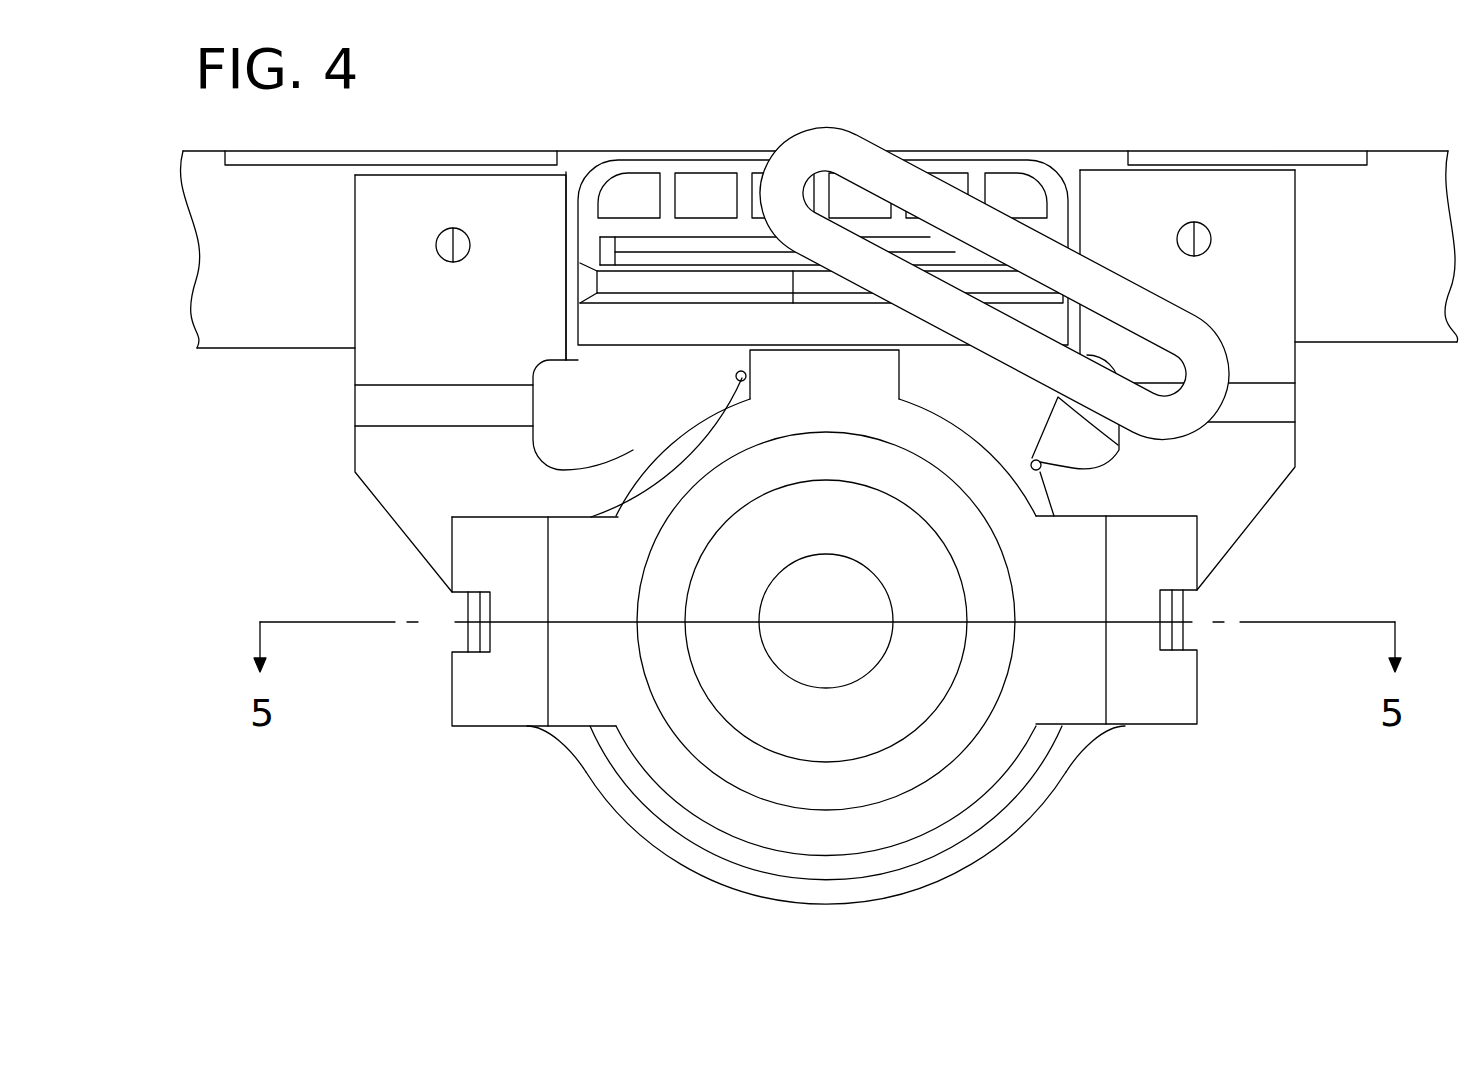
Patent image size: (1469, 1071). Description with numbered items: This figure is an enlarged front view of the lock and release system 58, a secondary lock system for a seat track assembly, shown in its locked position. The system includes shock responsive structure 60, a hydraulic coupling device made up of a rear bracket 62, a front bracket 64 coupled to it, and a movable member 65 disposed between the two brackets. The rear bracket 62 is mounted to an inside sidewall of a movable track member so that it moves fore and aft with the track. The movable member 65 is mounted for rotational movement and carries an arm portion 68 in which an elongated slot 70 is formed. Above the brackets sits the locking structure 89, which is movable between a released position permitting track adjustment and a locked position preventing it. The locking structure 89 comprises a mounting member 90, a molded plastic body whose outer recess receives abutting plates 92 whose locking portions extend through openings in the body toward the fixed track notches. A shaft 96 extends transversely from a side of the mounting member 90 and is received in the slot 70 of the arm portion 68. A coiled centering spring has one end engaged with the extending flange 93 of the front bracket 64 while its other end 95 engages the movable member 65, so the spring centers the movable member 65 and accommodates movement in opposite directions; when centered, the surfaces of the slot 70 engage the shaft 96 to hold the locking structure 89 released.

The lock and release system 58 is at (1302, 110).
The shock responsive structure 60 is at (1064, 774).
The rear bracket 62 is at (412, 512).
The front bracket 64 is at (573, 697).
The movable member 65 is at (1122, 450).
The arm portion 68 is at (1198, 337).
The elongated slot 70 is at (961, 243).
The locking structure 89 is at (757, 143).
The mounting member 90 is at (684, 166).
The abutting plates 92 is at (660, 245).
The extending flange 93 is at (737, 374).
The other end of the spring 95 is at (1044, 469).
The shaft 96 is at (855, 198).